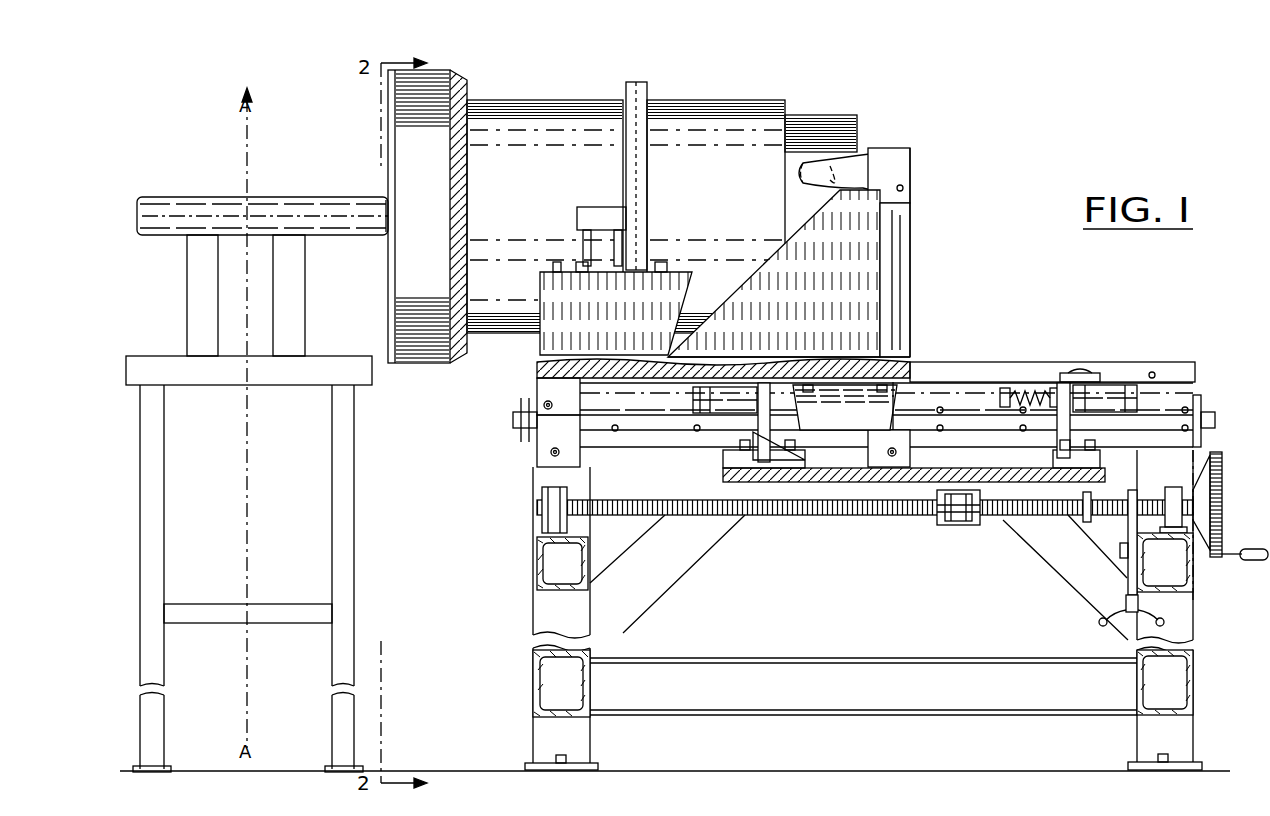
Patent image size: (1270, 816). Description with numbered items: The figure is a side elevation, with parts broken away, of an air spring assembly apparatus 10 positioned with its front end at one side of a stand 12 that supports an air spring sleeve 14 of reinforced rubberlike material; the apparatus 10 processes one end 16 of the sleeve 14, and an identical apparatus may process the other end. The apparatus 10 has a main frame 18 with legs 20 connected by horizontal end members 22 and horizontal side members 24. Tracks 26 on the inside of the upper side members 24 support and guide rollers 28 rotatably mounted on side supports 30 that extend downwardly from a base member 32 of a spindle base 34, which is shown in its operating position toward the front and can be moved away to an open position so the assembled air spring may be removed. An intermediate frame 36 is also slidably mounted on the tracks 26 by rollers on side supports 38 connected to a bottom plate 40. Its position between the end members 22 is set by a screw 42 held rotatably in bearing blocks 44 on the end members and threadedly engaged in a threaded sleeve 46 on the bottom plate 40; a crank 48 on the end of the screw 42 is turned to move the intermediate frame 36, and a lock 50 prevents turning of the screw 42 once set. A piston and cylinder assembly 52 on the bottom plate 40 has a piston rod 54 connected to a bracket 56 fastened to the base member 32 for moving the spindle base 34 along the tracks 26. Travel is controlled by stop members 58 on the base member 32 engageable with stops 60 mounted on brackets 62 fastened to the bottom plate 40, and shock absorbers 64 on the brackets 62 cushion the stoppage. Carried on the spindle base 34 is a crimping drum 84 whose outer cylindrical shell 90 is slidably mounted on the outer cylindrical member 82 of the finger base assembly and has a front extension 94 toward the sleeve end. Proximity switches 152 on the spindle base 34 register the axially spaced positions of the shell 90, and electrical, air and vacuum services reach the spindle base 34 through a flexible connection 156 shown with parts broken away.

The air spring assembly apparatus 10 is at (898, 123).
The stand 12 is at (347, 503).
The air spring sleeve 14 is at (290, 205).
The end of sleeve 16 is at (385, 197).
The main frame 18 is at (1190, 608).
The legs 20 is at (588, 736).
The horizontal end members 22 is at (537, 556).
The horizontal side members 24 is at (1195, 445).
The tracks 26 is at (1200, 408).
The rollers 28 is at (576, 471).
The side supports 30 is at (545, 453).
The base member 32 is at (925, 365).
The spindle base 34 is at (917, 310).
The intermediate frame 36 is at (818, 516).
The side supports 38 is at (1085, 373).
The bottom plate 40 is at (970, 515).
The screw 42 is at (1080, 512).
The bearing blocks 44 is at (542, 497).
The threaded sleeve 46 is at (958, 522).
The crank 48 is at (1222, 525).
The lock 50 is at (1110, 625).
The piston and cylinder assembly 52 is at (905, 405).
The piston rod 54 is at (585, 408).
The bracket 56 is at (540, 390).
The stop members 58 is at (822, 385).
The stops 60 is at (760, 440).
The brackets 62 is at (762, 482).
The shock absorbers 64 is at (720, 398).
The outer cylindrical member 82 is at (818, 118).
The crimping drum 84 is at (545, 100).
The outer cylindrical shell 90 is at (690, 100).
The front extension 94 is at (470, 100).
The proximity switches 152 is at (556, 262).
The flexible connection 156 is at (860, 152).